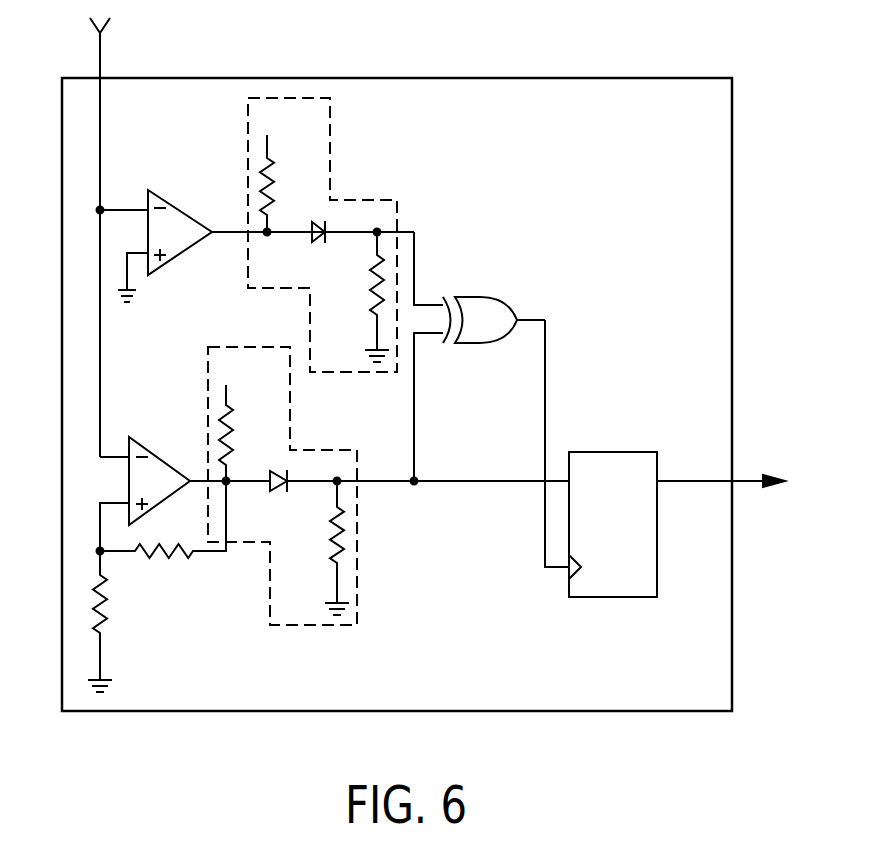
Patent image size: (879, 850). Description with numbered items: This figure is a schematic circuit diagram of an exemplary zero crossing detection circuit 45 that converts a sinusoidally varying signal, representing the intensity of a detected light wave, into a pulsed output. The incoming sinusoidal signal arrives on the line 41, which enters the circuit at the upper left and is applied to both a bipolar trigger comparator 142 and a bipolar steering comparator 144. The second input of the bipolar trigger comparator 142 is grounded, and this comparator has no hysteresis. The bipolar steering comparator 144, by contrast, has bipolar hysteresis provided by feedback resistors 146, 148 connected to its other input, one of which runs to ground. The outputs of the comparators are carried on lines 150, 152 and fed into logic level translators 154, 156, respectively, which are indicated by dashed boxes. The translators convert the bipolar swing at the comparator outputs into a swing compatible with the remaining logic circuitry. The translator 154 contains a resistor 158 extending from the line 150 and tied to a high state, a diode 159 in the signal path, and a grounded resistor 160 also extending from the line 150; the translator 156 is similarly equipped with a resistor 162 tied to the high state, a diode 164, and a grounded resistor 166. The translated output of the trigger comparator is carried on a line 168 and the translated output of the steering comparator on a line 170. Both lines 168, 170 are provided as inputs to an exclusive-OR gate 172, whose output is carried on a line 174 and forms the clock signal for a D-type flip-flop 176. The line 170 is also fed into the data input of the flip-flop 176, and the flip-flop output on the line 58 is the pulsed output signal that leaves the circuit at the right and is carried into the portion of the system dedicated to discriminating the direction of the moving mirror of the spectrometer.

The line 41 is at (101, 62).
The zero crossing detection circuit 45 is at (556, 78).
The line 58 is at (748, 478).
The bipolar trigger comparator 142 is at (189, 242).
The bipolar steering comparator 144 is at (171, 494).
The feedback resistor 146 is at (150, 555).
The feedback resistor 148 is at (105, 623).
The line 150 is at (237, 230).
The line 152 is at (200, 479).
The logic level translator 154 is at (330, 172).
The logic level translator 156 is at (290, 435).
The resistor 158 is at (272, 188).
The diode 159 is at (313, 238).
The resistor 160 is at (372, 293).
The resistor 162 is at (228, 432).
The diode 164 is at (266, 489).
The resistor 166 is at (338, 542).
The line 168 is at (403, 232).
The line 170 is at (368, 484).
The exclusive-OR gate 172 is at (500, 332).
The line 174 is at (545, 388).
The D-type flip-flop 176 is at (608, 452).